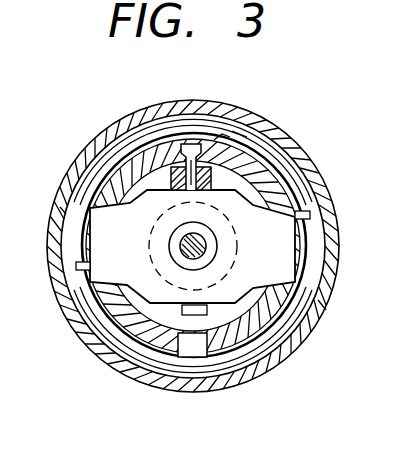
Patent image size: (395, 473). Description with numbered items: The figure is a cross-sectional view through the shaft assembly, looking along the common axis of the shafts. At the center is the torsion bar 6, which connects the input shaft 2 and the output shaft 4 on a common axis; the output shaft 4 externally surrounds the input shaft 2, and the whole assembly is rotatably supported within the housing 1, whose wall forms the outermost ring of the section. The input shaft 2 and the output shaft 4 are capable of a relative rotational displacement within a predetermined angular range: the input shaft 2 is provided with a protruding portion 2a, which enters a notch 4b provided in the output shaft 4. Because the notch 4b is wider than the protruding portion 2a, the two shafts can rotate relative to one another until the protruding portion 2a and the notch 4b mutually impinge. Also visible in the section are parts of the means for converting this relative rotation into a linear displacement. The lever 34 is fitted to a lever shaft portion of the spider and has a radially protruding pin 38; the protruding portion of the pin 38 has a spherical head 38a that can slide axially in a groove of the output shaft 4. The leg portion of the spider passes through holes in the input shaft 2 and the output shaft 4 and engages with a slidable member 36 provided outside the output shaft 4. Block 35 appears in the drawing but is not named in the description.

The housing 1 is at (225, 393).
The input shaft 2 is at (302, 346).
The protruding portion 2a is at (300, 216).
The output shaft 4 is at (124, 348).
The notch 4b is at (62, 209).
The torsion bar 6 is at (206, 246).
The lever 34 is at (236, 130).
The clamp block 35 is at (253, 361).
The slidable member 36 is at (229, 122).
The pin 38 is at (172, 166).
The spherical head 38a is at (191, 143).